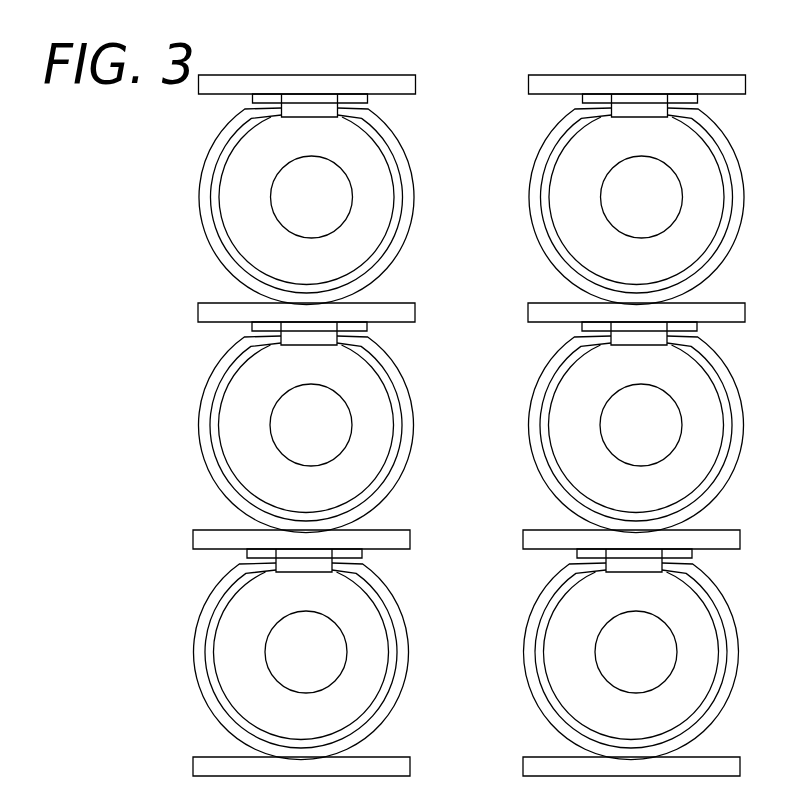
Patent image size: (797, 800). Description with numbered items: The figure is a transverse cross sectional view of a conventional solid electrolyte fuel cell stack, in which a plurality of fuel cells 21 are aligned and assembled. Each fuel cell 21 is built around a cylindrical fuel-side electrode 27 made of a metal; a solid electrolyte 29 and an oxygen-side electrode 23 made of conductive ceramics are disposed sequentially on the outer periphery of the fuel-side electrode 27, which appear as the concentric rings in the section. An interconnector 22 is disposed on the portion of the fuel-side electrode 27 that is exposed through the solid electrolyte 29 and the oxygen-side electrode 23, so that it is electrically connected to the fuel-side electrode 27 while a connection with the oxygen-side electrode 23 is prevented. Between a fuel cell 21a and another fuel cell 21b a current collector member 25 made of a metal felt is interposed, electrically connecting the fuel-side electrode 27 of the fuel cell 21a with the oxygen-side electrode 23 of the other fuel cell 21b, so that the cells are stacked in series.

The fuel cell 21 is at (78, 207).
The fuel cell 21a is at (176, 409).
The other fuel cell 21b is at (176, 211).
The interconnector 22 is at (290, 102).
The oxygen-side electrode 23 is at (387, 133).
The current collector member 25 is at (385, 83).
The fuel-side electrode 27 is at (383, 212).
The solid electrolyte 29 is at (395, 167).